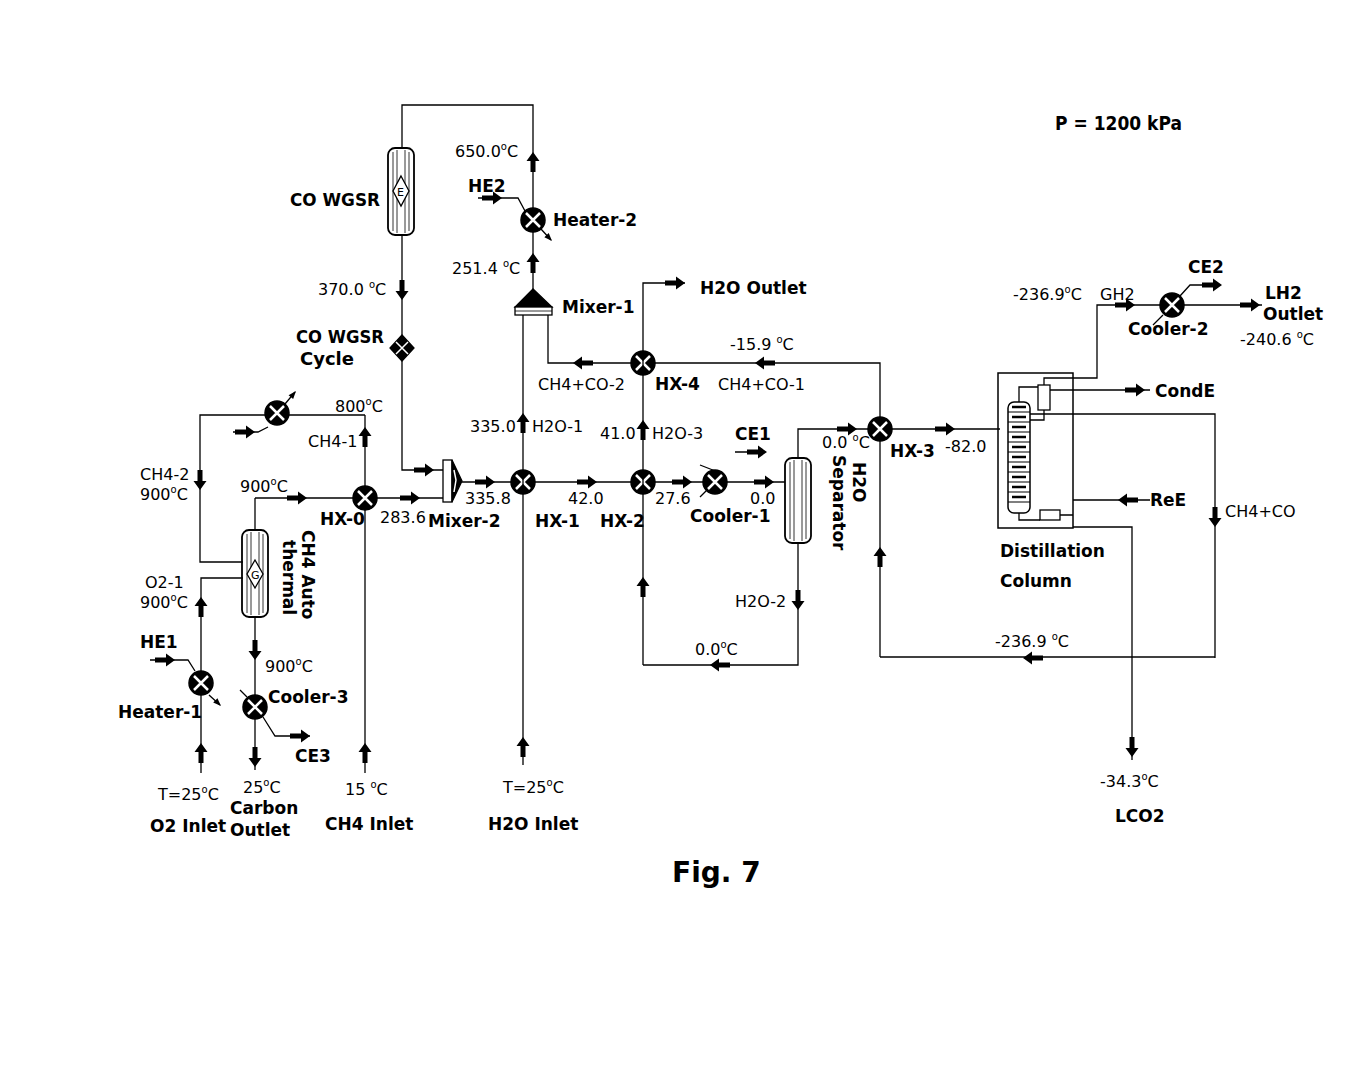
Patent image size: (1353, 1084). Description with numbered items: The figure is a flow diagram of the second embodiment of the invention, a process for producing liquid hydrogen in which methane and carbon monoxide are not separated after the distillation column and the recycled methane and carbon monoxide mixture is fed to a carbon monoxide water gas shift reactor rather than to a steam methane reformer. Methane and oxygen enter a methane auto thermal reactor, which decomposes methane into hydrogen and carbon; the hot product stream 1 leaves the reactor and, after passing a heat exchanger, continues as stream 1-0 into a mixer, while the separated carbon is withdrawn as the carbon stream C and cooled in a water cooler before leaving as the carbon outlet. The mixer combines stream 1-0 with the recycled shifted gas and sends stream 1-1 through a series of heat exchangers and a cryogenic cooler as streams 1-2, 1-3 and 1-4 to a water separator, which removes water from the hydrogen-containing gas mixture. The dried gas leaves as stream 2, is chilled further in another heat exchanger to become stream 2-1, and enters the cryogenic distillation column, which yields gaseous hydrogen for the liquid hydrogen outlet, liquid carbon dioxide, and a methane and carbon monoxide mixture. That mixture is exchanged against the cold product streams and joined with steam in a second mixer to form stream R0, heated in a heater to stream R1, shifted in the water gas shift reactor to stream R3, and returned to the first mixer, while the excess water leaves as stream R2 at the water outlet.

The stream 1 (CH4 + O2 reactor product at 900 C) 1 is at (297, 491).
The stream 1-0 (reformer product after HX-0) 1-0 is at (402, 491).
The stream 1-1 (Mixer-2 outlet) 1-1 is at (481, 473).
The stream 1-2 (after HX-1) 1-2 is at (583, 473).
The stream 1-3 (after HX-2) 1-3 is at (678, 473).
The stream 1-4 (after Cooler-1 to H2O separator) 1-4 is at (755, 473).
The stream 2 (separator vapor outlet) 2 is at (847, 421).
The stream 2-1 (feed to distillation column) 2-1 is at (943, 421).
The stream R0 (Mixer-1 outlet to Heater-2) R0 is at (545, 264).
The stream R1 (Heater-2 outlet to CO WGSR) R1 is at (545, 163).
The stream R2 (H2O outlet) R2 is at (746, 254).
The stream R3 (CO WGSR outlet) R3 is at (414, 290).
The stream C (carbon outlet) C is at (262, 647).